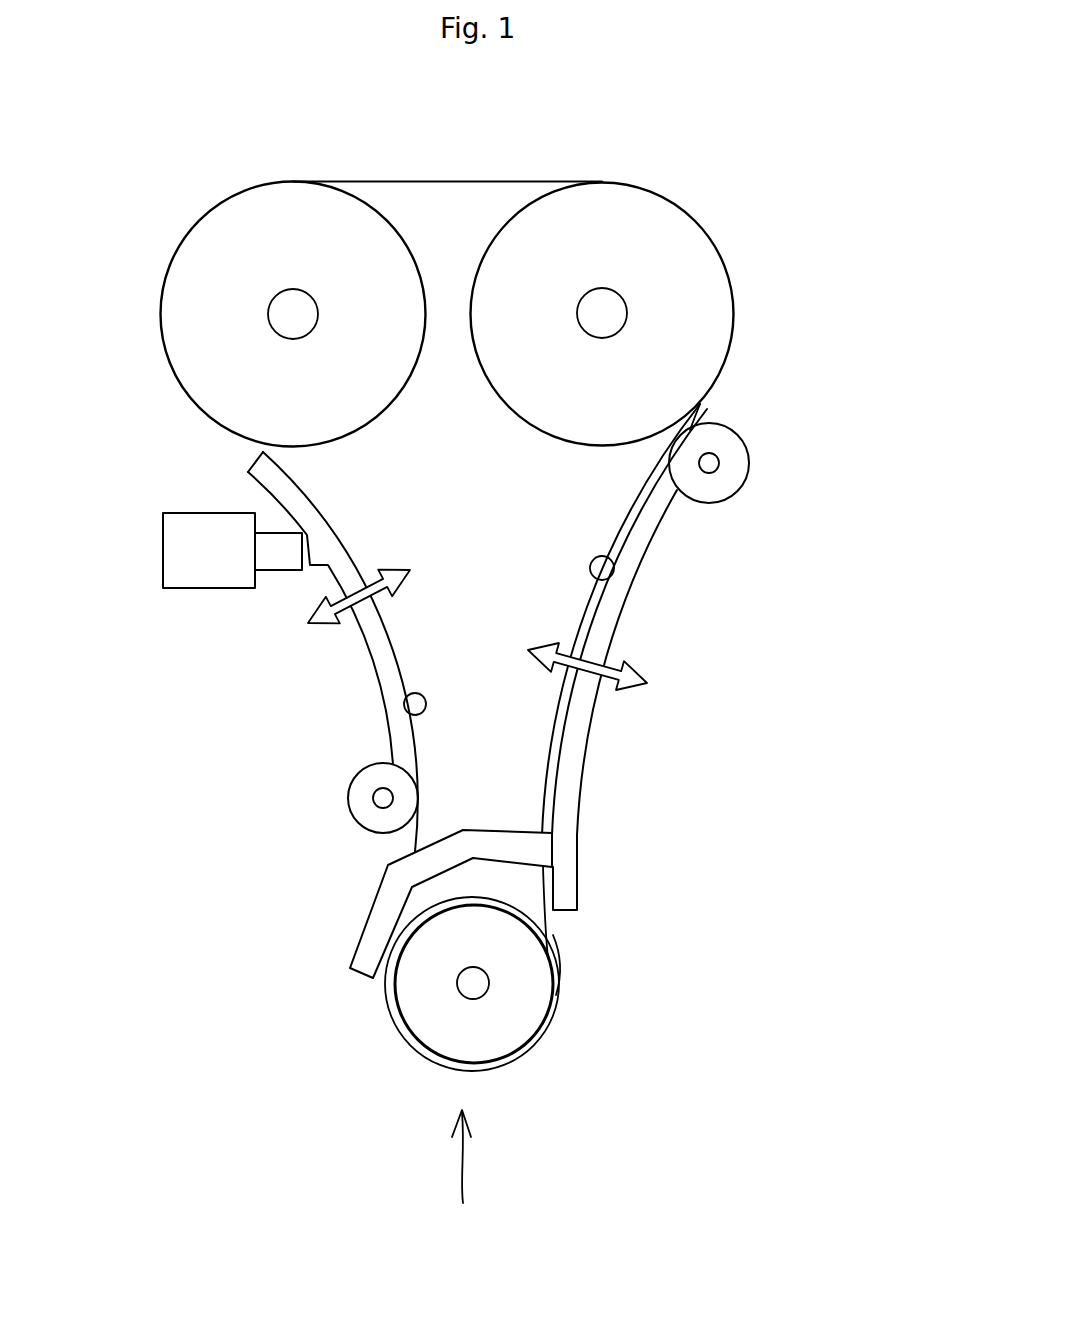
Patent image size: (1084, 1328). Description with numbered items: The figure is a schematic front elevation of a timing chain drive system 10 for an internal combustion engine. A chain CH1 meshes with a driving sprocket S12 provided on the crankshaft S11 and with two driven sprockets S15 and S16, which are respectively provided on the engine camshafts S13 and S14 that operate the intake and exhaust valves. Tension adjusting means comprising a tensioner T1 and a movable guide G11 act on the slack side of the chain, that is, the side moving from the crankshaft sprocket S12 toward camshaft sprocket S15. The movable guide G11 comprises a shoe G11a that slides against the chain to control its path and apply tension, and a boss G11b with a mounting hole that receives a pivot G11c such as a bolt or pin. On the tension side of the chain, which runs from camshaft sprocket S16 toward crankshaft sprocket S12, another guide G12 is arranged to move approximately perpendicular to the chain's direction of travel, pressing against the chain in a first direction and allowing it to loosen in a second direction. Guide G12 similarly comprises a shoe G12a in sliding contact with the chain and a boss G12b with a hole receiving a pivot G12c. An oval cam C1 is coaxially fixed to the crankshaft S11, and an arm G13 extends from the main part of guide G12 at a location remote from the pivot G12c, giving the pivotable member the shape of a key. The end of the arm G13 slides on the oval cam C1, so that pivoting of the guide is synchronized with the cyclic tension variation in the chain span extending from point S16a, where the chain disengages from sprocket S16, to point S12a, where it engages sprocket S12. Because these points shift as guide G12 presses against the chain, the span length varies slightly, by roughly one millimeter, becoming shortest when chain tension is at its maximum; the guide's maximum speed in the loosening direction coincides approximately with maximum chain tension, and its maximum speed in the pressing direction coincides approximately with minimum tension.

The chain CH1 is at (458, 181).
The camshaft S13 is at (272, 302).
The camshaft S14 is at (620, 302).
The driven sprocket S15 is at (188, 320).
The driven sprocket S16 is at (705, 318).
The point of disengagement from sprocket S16 S16a is at (690, 410).
The tensioner T1 is at (178, 547).
The movable guide G11 is at (278, 652).
The shoe G11a is at (410, 721).
The boss G11b is at (360, 782).
The pivot G11c is at (375, 805).
The guide G12 is at (744, 681).
The shoe G12a is at (605, 557).
The boss G12b is at (733, 485).
The pivot G12c is at (715, 458).
The arm G13 is at (352, 948).
The crankshaft S11 is at (462, 993).
The driving sprocket S12 is at (502, 1040).
The point of engagement with sprocket S12 S12a is at (553, 963).
The oval cam C1 is at (553, 1030).
The timing chain drive system 10 is at (461, 1180).